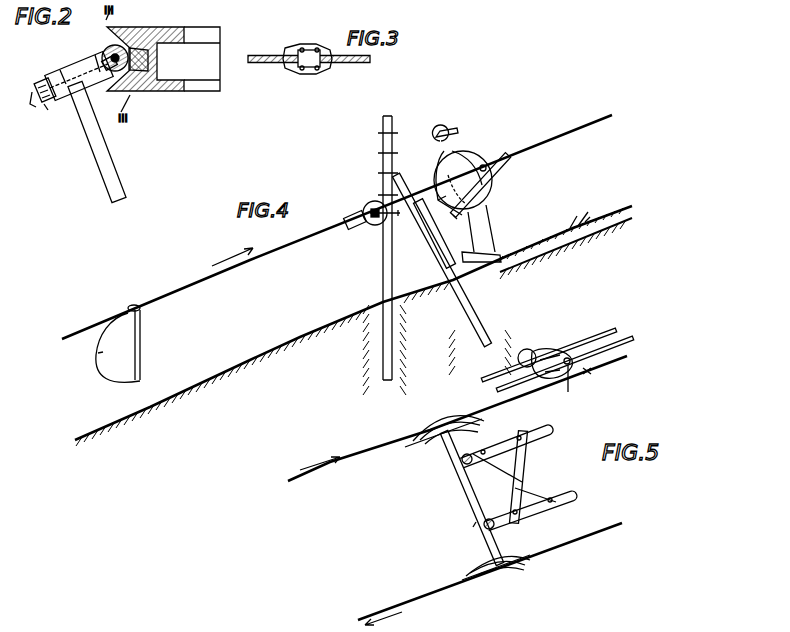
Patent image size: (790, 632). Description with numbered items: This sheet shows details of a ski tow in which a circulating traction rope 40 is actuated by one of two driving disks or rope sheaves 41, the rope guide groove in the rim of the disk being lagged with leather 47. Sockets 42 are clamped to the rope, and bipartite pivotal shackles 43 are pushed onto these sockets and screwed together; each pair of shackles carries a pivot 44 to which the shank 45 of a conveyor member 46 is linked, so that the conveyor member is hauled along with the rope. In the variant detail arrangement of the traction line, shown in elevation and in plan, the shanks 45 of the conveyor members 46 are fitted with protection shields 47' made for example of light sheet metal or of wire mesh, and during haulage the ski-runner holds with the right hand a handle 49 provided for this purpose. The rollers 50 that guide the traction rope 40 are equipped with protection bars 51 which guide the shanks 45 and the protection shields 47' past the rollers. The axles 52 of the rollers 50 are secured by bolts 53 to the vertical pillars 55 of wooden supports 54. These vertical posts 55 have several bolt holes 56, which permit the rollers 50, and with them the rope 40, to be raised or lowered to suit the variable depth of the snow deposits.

In FIG. 3, the circulating traction rope 40 is at (349, 62).
In FIG. 5, the circulating traction rope 40 is at (313, 468).
In FIG. 2, the driving disk 41 is at (182, 27).
In FIG. 3, the socket 42 is at (308, 68).
In FIG. 2, the bipartite pivotal shackle 43 is at (105, 54).
In FIG. 3, the bipartite pivotal shackle 43 is at (298, 50).
In FIG. 2, the pivot 44 is at (70, 78).
In FIG. 2, the shank 45 is at (108, 182).
In FIG. 4, the shank 45 is at (142, 338).
In FIG. 4, the conveyor member 46 is at (143, 373).
In FIG. 2, the leather lagging 47 is at (144, 82).
In FIG. 4, the protection shield 47' is at (282, 243).
In FIG. 5, the protection shield 47' is at (557, 371).
In FIG. 4, the handle 49 is at (500, 172).
In FIG. 5, the handle 49 is at (577, 380).
In FIG. 4, the roller 50 is at (372, 229).
In FIG. 5, the roller 50 is at (450, 418).
In FIG. 4, the protection bar 51 is at (346, 228).
In FIG. 5, the protection bar 51 is at (417, 434).
In FIG. 4, the axle 52 is at (370, 208).
In FIG. 5, the axle 52 is at (466, 496).
In FIG. 4, the bolt 53 is at (390, 214).
In FIG. 5, the bolt 53 is at (462, 459).
In FIG. 4, the wooden support 54 is at (353, 326).
In FIG. 5, the wooden support 54 is at (518, 478).
In FIG. 4, the vertical pillar 55 is at (383, 280).
In FIG. 5, the vertical pillar 55 is at (470, 455).
In FIG. 4, the bolt hole 56 is at (378, 158).